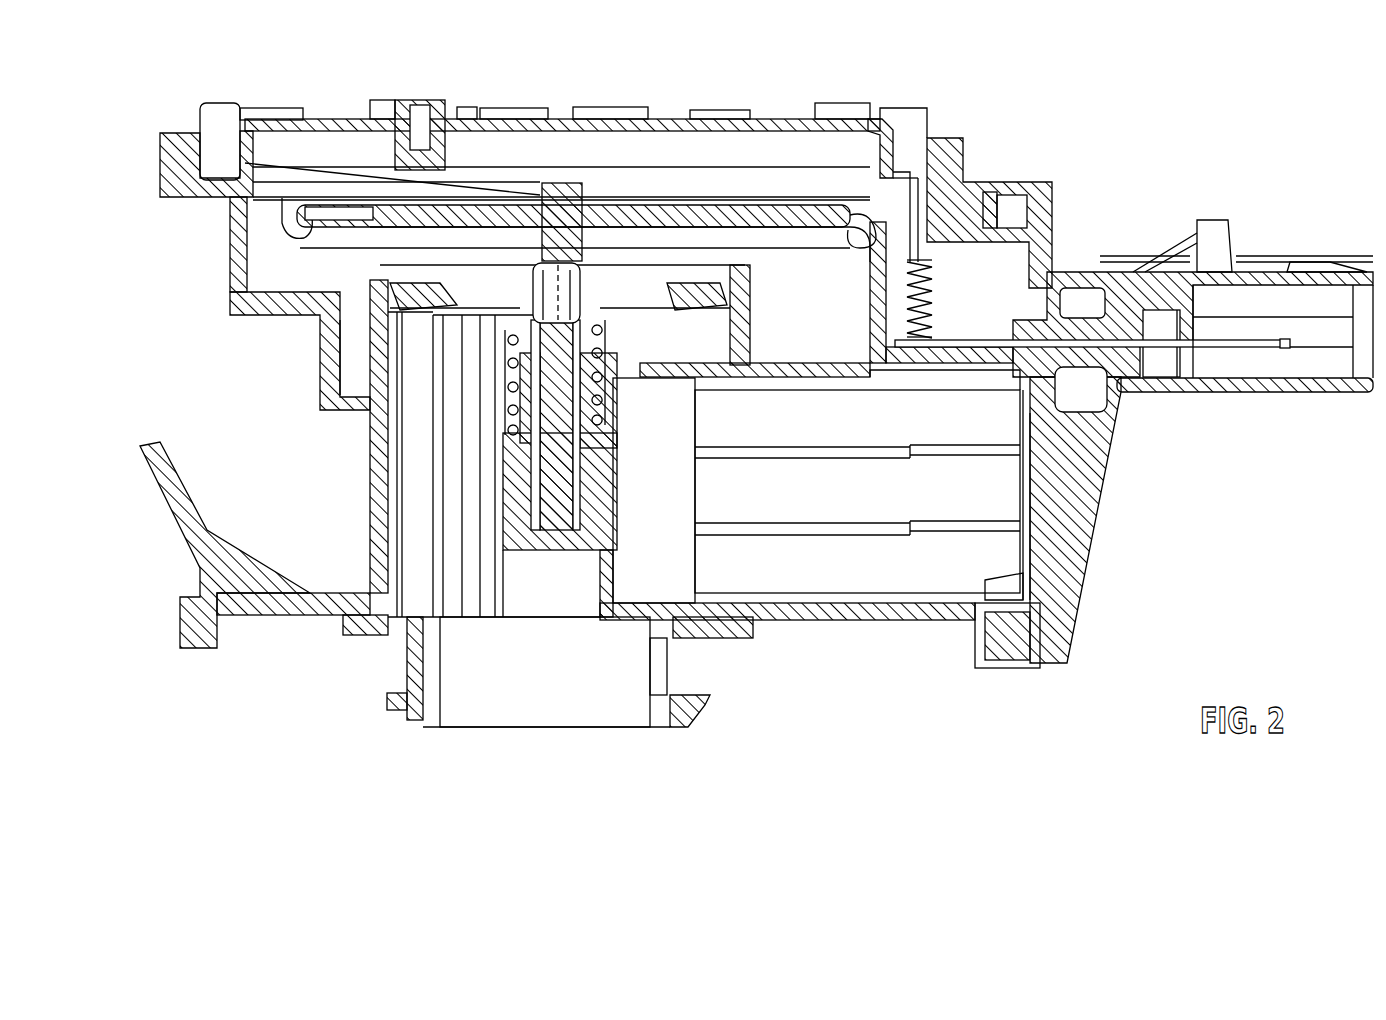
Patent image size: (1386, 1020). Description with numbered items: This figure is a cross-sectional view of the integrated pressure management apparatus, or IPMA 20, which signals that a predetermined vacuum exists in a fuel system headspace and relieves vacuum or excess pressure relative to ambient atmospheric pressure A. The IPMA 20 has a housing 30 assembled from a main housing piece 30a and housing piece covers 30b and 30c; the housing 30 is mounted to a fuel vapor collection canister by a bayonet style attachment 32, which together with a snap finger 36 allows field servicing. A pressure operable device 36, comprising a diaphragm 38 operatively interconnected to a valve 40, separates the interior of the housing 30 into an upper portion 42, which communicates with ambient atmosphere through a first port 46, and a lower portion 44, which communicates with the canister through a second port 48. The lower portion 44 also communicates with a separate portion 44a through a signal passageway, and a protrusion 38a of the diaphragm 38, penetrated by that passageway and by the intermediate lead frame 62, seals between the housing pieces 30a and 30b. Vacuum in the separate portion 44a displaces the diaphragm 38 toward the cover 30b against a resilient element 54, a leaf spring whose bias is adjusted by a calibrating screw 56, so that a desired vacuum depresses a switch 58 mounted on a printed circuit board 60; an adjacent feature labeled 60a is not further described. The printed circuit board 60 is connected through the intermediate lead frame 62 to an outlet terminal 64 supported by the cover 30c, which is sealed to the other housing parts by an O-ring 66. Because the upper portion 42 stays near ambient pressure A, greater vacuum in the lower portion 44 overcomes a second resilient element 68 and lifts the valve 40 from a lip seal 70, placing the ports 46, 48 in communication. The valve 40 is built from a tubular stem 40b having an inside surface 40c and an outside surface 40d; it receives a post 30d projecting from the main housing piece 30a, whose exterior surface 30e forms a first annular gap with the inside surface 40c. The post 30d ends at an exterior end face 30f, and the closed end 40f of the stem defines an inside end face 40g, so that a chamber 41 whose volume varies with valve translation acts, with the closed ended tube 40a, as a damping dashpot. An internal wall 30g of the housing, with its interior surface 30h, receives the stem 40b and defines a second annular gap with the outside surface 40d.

The integrated pressure management apparatus 20 is at (1203, 158).
The housing 30 is at (1110, 90).
The main housing piece 30a is at (988, 194).
The housing piece cover 30b is at (940, 168).
The housing piece cover 30c is at (1054, 240).
The post 30d is at (555, 540).
The exterior surface 30e is at (605, 545).
The exterior end face 30f is at (625, 378).
The internal wall 30g is at (520, 350).
The interior surface 30h is at (503, 425).
The bayonet style attachment 32 is at (410, 703).
The pressure operable device 36 is at (763, 72).
The diaphragm 38 is at (650, 215).
The protrusion 38a is at (935, 230).
The valve 40 is at (610, 230).
The closed ended tube 40a is at (545, 280).
The tubular stem 40b is at (505, 290).
The inside surface 40c is at (530, 300).
The outside surface 40d is at (505, 305).
The closed end 40f is at (515, 290).
The inside end face 40g is at (640, 280).
The chamber 41 is at (535, 272).
The upper portion 42 is at (228, 290).
The lower portion 44 is at (463, 605).
The separate portion 44a is at (270, 175).
The first port 46 is at (1370, 250).
The second port 48 is at (655, 728).
The resilient element 54 is at (355, 175).
The calibrating screw 56 is at (420, 150).
The switch 58 is at (560, 148).
The printed circuit board 60 is at (770, 128).
The cover lip 60a is at (895, 300).
The intermediate lead frame 62 is at (892, 300).
The outlet terminal 64 is at (1083, 413).
The O-ring 66 is at (1000, 665).
The second resilient element 68 is at (600, 425).
The lip seal 70 is at (332, 347).
The ambient atmospheric pressure A is at (620, 410).